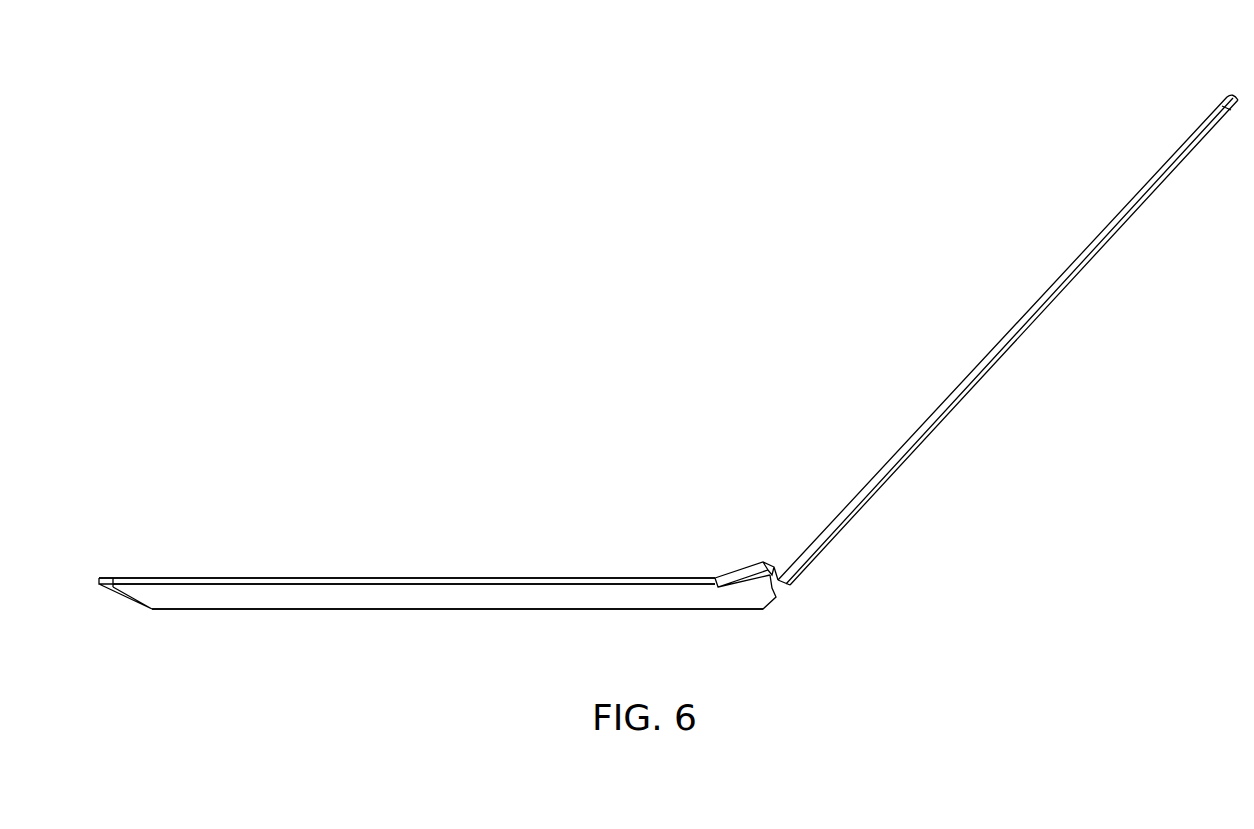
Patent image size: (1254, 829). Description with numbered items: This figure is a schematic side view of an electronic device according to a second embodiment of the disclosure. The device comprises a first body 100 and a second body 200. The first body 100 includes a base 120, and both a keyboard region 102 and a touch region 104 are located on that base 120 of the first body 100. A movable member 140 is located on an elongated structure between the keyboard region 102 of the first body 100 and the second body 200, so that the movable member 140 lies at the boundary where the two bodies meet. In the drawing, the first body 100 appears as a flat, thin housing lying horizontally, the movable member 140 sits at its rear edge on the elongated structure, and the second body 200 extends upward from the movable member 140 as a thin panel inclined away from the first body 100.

The first body 100 is at (398, 524).
The keyboard region 102 is at (562, 561).
The touch region 104 is at (226, 562).
The base 120 is at (410, 609).
The movable member 140 is at (740, 570).
The second body 200 is at (1187, 145).